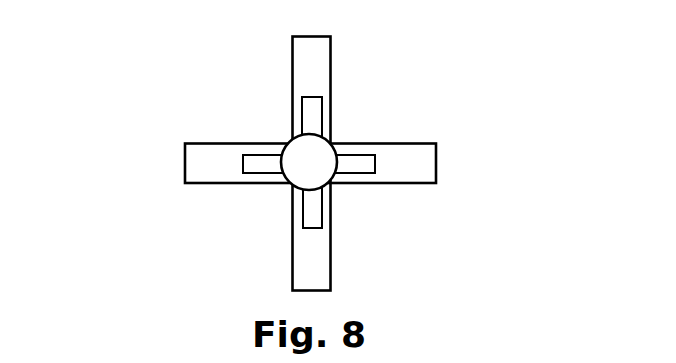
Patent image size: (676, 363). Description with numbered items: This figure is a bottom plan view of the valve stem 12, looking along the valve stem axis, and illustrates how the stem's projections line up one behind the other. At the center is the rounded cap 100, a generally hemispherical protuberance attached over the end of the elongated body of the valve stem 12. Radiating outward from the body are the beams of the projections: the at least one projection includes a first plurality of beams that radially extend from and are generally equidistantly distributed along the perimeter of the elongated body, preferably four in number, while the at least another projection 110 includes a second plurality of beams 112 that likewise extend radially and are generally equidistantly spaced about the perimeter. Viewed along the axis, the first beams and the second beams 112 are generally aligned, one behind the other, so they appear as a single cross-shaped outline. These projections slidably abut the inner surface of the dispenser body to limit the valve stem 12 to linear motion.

The valve stem 12 is at (314, 161).
The rounded cap 100 is at (310, 158).
The another projection 110 is at (362, 65).
The second plurality of beams 112 is at (419, 162).